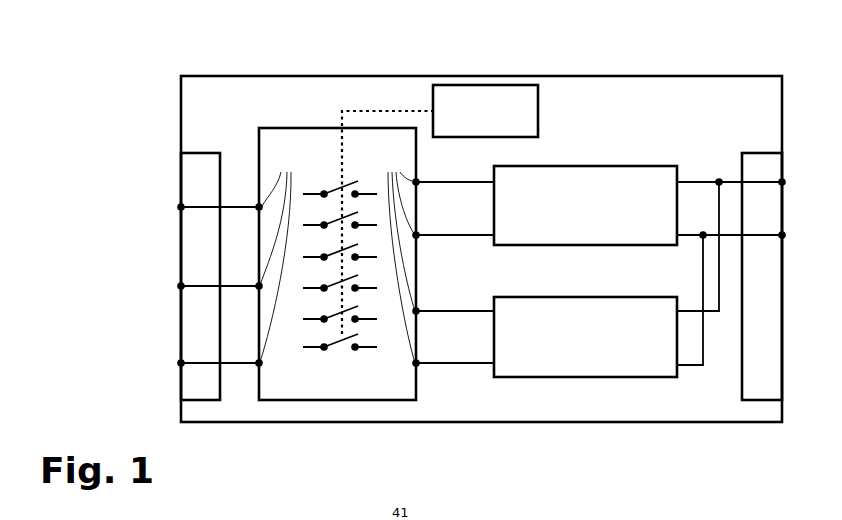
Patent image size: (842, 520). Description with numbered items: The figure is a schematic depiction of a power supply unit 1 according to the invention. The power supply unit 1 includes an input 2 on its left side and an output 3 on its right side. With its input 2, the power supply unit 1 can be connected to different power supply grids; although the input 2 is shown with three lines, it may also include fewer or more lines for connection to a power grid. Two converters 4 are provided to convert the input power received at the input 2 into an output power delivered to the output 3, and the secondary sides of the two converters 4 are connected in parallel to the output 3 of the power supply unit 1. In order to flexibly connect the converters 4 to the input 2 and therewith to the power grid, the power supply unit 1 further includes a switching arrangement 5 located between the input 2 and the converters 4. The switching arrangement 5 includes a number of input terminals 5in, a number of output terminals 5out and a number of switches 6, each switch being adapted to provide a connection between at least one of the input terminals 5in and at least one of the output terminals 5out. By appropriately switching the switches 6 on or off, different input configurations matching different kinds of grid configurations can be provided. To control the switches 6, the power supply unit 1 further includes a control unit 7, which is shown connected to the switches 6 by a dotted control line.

The power supply unit 1 is at (242, 75).
The input 2 is at (195, 183).
The output 3 is at (763, 340).
The converter 4 is at (585, 271).
The switching arrangement 5 is at (346, 247).
The input terminal 5in is at (280, 252).
The output terminal 5out is at (393, 253).
The switch 6 is at (323, 174).
The control unit 7 is at (485, 111).